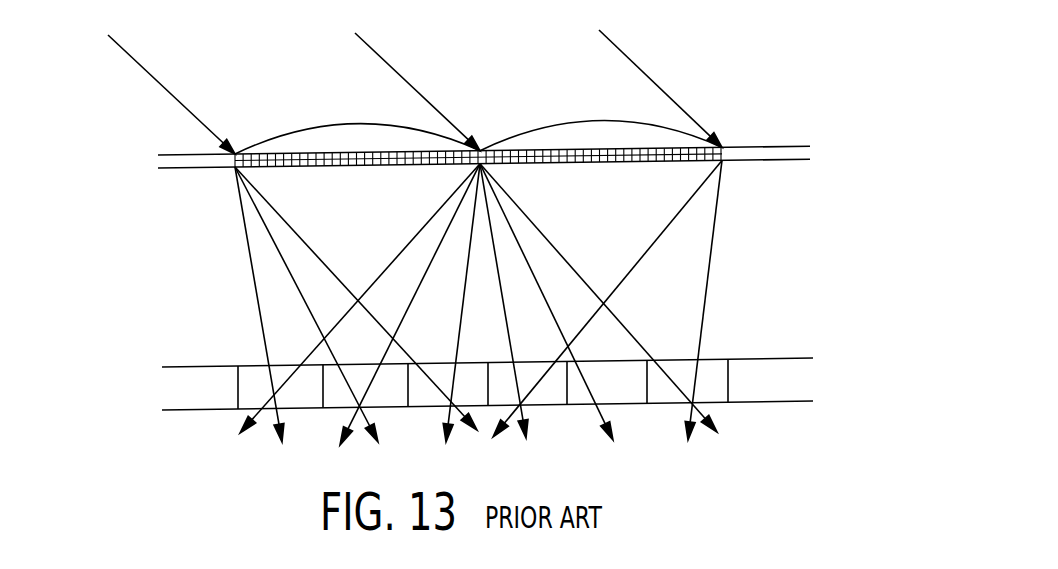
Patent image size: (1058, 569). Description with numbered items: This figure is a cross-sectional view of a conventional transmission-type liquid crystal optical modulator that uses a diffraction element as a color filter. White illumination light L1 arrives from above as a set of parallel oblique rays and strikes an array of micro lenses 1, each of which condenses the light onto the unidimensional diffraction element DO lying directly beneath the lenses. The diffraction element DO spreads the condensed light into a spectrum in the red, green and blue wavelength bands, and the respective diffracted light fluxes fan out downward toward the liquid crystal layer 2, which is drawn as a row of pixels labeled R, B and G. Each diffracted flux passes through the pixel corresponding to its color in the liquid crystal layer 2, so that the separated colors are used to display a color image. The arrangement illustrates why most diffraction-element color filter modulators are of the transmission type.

The white illumination light L1 is at (157, 80).
The micro lens 1 is at (330, 126).
The unidimensional diffraction element DO is at (795, 155).
The liquid crystal layer 2 is at (793, 382).